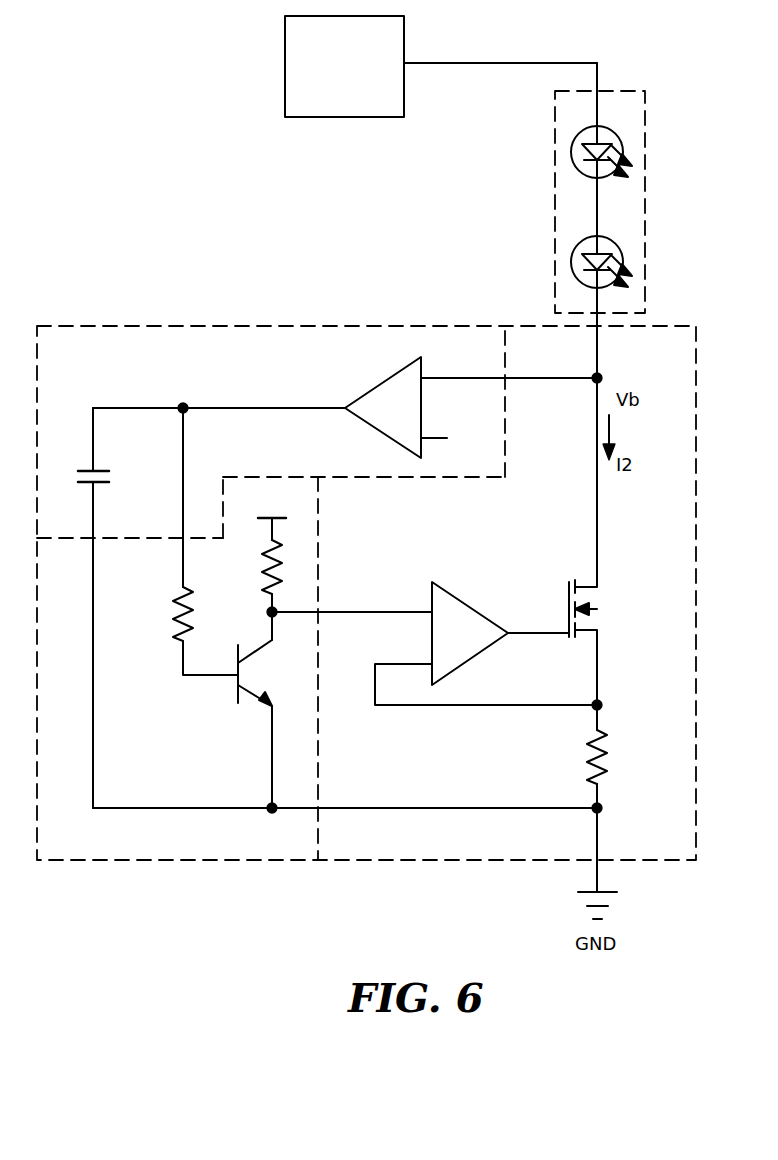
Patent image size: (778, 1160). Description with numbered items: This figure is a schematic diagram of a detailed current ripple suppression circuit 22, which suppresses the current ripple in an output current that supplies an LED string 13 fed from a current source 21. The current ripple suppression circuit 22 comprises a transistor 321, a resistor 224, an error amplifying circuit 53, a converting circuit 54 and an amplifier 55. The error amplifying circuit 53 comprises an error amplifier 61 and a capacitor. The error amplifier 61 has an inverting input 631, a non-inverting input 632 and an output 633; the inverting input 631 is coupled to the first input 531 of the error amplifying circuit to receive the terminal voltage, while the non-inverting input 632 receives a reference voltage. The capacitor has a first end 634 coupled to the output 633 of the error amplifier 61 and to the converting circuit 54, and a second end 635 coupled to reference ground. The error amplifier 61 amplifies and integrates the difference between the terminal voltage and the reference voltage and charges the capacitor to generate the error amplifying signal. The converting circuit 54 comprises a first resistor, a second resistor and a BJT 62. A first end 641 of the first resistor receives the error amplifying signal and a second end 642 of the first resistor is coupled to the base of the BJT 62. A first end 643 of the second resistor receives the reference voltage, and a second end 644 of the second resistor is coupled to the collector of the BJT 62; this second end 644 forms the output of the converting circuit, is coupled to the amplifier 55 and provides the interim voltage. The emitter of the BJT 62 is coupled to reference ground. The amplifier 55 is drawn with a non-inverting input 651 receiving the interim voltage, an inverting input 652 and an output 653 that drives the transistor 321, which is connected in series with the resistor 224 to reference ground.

The LED string 13 is at (645, 103).
The current source 21 is at (340, 117).
The current ripple suppression circuit 22 is at (696, 468).
The error amplifying circuit 53 is at (84, 366).
The converting circuit 54 is at (84, 852).
The amplifier 55 is at (476, 654).
The error amplifier 61 is at (384, 386).
The BJT 62 is at (262, 684).
The resistor 224 is at (604, 757).
The transistor 321 is at (606, 601).
The first input of error amplifying circuit 531 is at (506, 380).
The inverting input 631 is at (427, 378).
The non-inverting input 632 is at (428, 438).
The output 633 is at (344, 408).
The first end of capacitor C2 634 is at (98, 470).
The second end of capacitor C2 635 is at (99, 484).
The first end of resistor R3 641 is at (183, 584).
The second end of resistor R3 642 is at (183, 646).
The first terminal of resistor R4 643 is at (276, 541).
The second end of resistor R4 644 is at (268, 590).
The non-inverting input terminal of operational amplifier 651 is at (428, 612).
The inverting input terminal of operational amplifier 652 is at (430, 664).
The output terminal of operational amplifier 653 is at (510, 633).